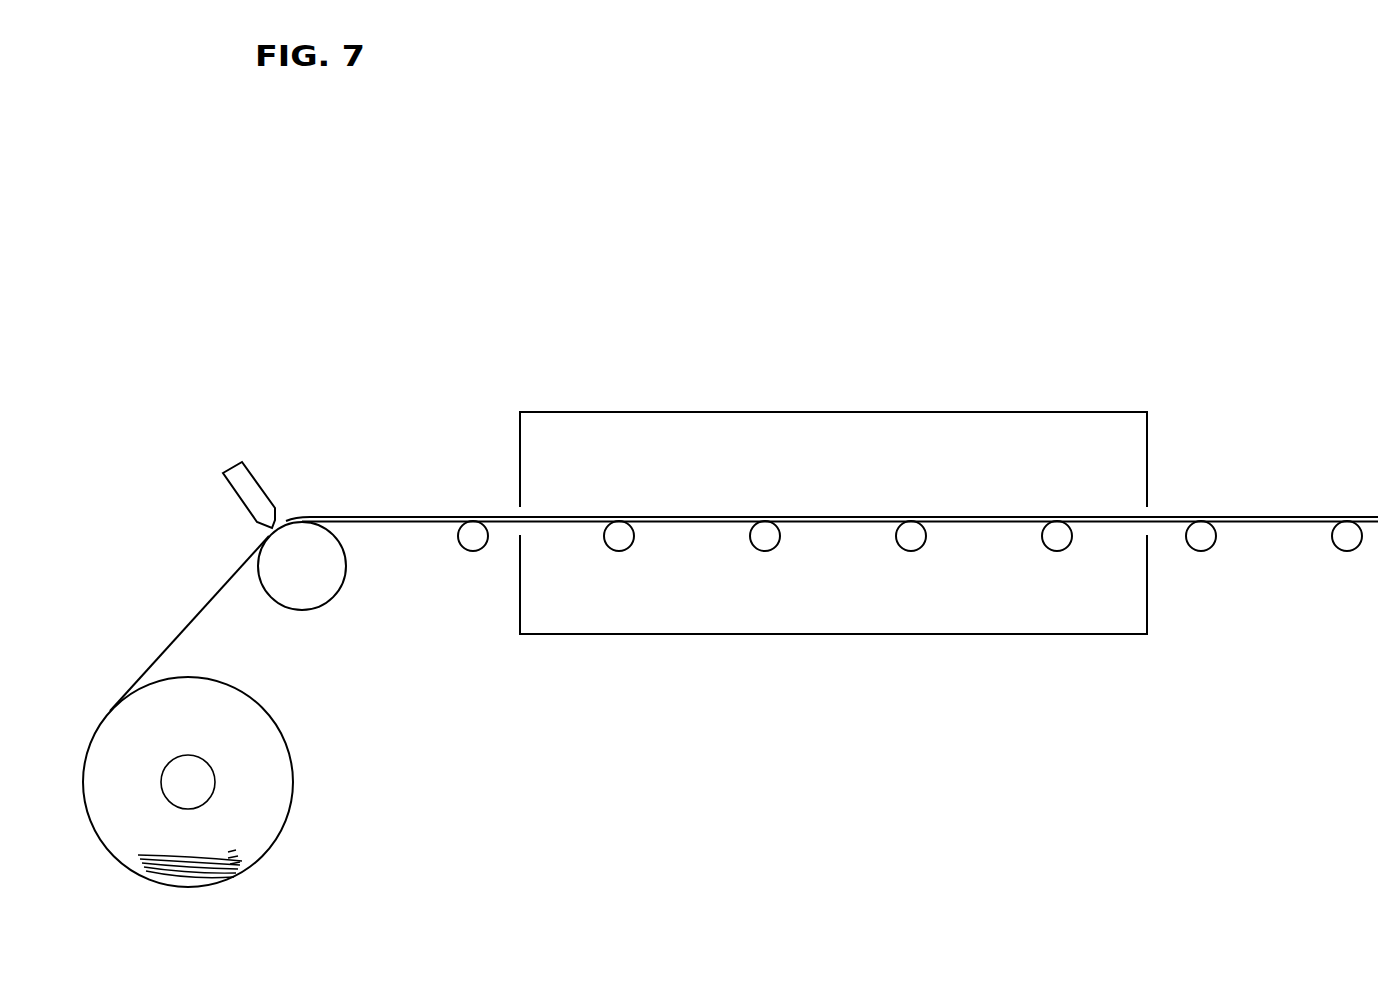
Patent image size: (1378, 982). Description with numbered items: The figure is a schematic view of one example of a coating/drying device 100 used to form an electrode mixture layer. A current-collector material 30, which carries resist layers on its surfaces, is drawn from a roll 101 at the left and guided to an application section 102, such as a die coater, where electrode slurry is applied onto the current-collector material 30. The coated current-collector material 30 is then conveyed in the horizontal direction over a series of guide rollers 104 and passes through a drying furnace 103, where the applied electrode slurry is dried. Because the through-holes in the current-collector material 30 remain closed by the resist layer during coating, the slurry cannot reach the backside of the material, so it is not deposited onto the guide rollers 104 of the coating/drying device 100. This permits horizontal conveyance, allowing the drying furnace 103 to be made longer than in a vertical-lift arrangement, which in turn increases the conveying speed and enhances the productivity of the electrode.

The coating/drying device 100 is at (1079, 312).
The current-collector material 30 is at (177, 640).
The roll 101 is at (252, 779).
The application section 102 is at (252, 497).
The drying furnace 103 is at (832, 412).
The guide rollers 104 is at (620, 538).